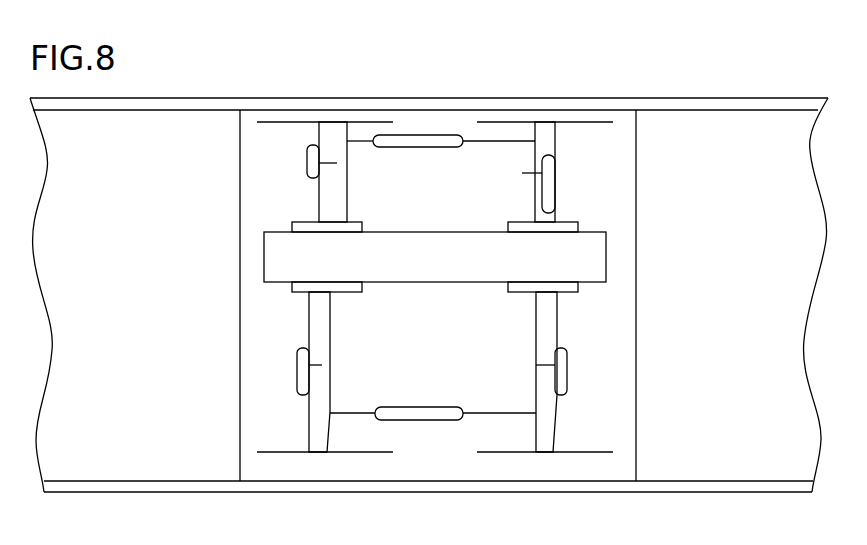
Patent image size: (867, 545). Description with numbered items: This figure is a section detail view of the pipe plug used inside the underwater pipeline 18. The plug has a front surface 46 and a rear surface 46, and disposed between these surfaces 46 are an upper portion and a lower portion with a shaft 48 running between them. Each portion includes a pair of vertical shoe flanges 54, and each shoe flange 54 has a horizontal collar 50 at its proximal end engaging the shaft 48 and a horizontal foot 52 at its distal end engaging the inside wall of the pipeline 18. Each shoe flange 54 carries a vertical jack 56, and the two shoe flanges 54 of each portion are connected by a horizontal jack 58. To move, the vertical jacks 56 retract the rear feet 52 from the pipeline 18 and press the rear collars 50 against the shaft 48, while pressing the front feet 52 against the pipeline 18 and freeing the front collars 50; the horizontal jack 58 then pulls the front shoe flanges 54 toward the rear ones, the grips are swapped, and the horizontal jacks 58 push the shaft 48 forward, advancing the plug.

The underwater pipeline 18 is at (690, 97).
The front surface and rear surface 46 is at (240, 190).
The shaft 48 is at (606, 257).
The horizontal collar 50 is at (348, 292).
The horizontal foot 52 is at (302, 122).
The vertical shoe flange 54 is at (347, 188).
The vertical jack 56 is at (549, 178).
The horizontal jack 58 is at (490, 141).